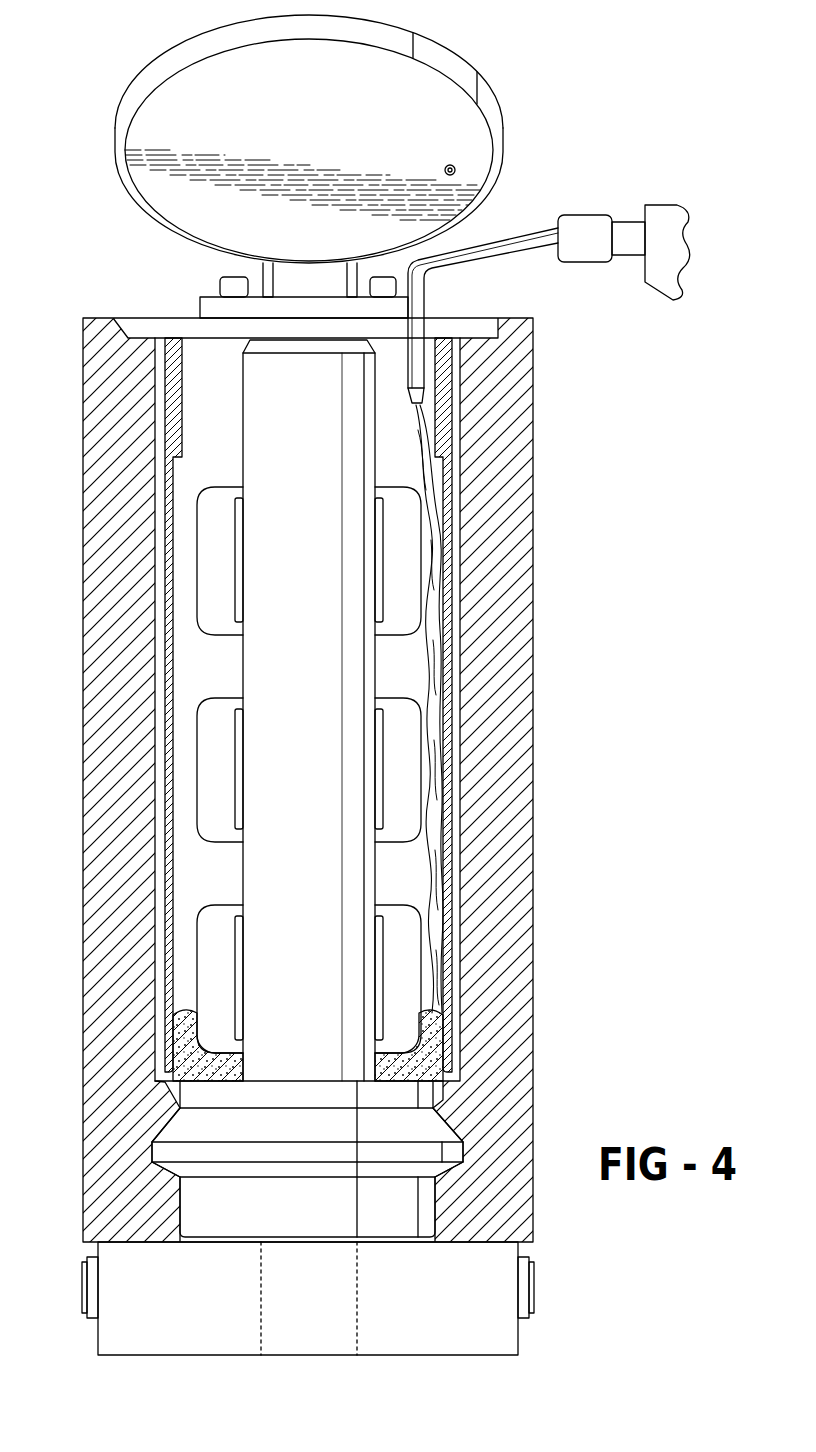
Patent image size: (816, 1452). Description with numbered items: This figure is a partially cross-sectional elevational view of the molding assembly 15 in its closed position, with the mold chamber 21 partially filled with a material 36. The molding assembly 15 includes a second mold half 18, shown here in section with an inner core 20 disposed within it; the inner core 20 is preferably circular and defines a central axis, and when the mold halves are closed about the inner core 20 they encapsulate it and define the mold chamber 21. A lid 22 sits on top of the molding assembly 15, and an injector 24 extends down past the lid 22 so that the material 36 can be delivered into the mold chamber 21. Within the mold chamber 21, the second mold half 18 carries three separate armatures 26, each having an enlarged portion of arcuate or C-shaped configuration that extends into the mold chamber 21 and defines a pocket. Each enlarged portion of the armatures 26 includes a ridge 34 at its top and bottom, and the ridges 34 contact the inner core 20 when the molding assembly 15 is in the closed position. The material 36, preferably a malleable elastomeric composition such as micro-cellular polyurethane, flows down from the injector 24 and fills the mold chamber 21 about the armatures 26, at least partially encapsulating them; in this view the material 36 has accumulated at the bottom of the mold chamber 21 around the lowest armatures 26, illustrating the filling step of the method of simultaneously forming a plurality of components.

The molding assembly 15 is at (582, 410).
The second mold half 18 is at (513, 815).
The inner core 20 is at (307, 607).
The mold chamber 21 is at (200, 395).
The lid 22 is at (192, 90).
The injector 24 is at (515, 233).
The armature 26 is at (217, 545).
The ridge 34 is at (241, 699).
The material 36 is at (437, 618).